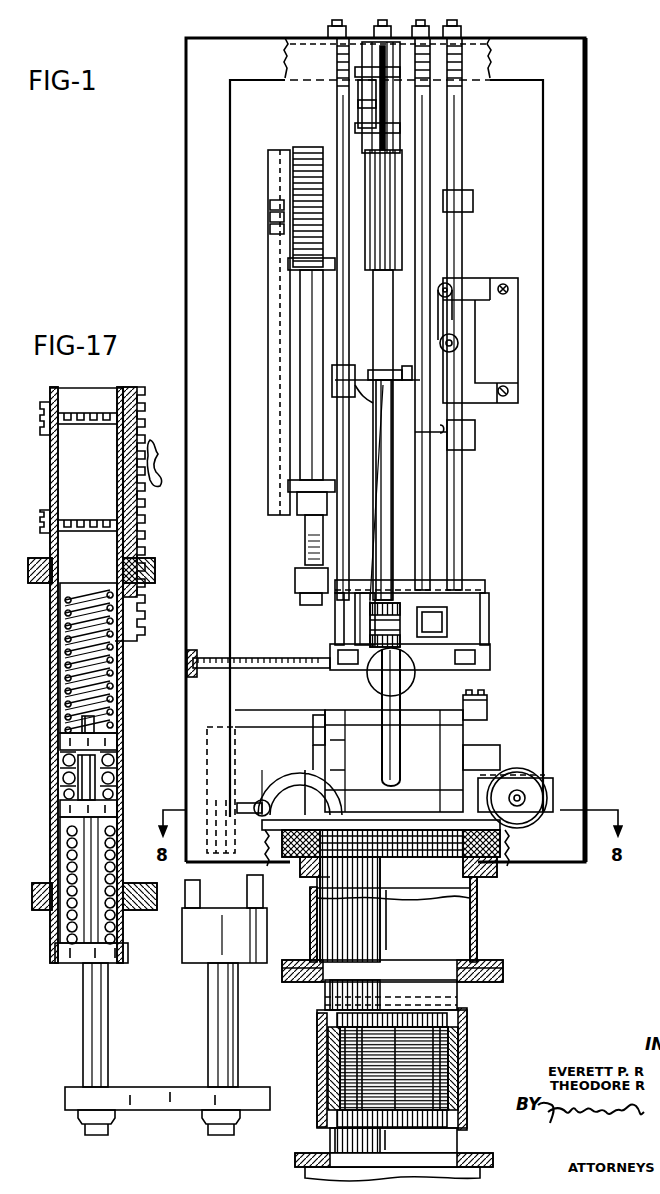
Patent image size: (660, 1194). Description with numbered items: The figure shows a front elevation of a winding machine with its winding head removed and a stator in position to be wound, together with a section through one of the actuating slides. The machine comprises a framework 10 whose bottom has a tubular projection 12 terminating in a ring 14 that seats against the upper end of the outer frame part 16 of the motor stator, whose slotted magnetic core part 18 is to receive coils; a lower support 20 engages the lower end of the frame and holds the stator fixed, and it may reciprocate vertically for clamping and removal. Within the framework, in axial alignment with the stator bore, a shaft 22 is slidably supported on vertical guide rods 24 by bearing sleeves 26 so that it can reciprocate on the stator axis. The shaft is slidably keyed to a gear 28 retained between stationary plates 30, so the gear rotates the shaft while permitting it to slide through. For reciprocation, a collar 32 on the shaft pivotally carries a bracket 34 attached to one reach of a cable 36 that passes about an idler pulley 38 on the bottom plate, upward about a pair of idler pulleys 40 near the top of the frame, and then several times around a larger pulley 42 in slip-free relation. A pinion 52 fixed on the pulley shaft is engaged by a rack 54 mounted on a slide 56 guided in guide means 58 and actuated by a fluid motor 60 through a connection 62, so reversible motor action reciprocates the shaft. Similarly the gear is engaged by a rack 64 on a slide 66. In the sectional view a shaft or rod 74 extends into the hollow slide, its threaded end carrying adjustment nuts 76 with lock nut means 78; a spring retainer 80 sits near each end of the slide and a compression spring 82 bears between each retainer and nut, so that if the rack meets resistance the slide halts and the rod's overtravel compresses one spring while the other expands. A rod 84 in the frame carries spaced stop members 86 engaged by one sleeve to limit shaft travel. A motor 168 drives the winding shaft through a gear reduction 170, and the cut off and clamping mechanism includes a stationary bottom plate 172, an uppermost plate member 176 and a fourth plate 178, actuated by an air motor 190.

In FIG. 1, the framework 10 is at (575, 494).
In FIG. 1, the tubular projection 12 is at (486, 965).
In FIG. 1, the ring 14 is at (482, 1000).
In FIG. 1, the outer frame part 16 is at (471, 1029).
In FIG. 1, the slotted magnetic core part 18 is at (467, 1062).
In FIG. 1, the lower support 20 is at (463, 1156).
In FIG. 1, the shaft 22 is at (400, 498).
In FIG. 1, the vertical guide rods 24 is at (465, 262).
In FIG. 1, the bearing sleeves 26 is at (440, 387).
In FIG. 1, the gear 28 is at (350, 628).
In FIG. 1, the stationary plates 30 is at (483, 652).
In FIG. 1, the collar 32 is at (398, 367).
In FIG. 1, the bracket 34 is at (344, 408).
In FIG. 1, the cable 36 is at (396, 300).
In FIG. 1, the idler pulley 38 is at (416, 672).
In FIG. 1, the idler pulleys 40 is at (378, 75).
In FIG. 1, the pulley 42 is at (398, 192).
In FIG. 1, the pinion 52 is at (292, 224).
In FIG. 17, the pinion 52 is at (162, 453).
In FIG. 1, the rack 54 is at (296, 158).
In FIG. 17, the rack 54 is at (134, 394).
In FIG. 1, the slide 56 is at (279, 332).
In FIG. 17, the slide 56 is at (86, 396).
In FIG. 1, the guide means 58 is at (290, 265).
In FIG. 17, the guide means 58 is at (36, 580).
In FIG. 17, the fluid motor 60 is at (242, 952).
In FIG. 17, the connection 62 is at (155, 1100).
In FIG. 1, the rack 64 is at (440, 592).
In FIG. 1, the slide 66 is at (440, 640).
In FIG. 1, the shaft or rod 74 is at (304, 564).
In FIG. 17, the shaft or rod 74 is at (99, 1045).
In FIG. 17, the adjustment nuts 76 is at (124, 756).
In FIG. 17, the lock nut means 78 is at (52, 778).
In FIG. 17, the spring retainer 80 is at (110, 622).
In FIG. 17, the compression spring 82 is at (108, 670).
In FIG. 1, the rod 84 is at (462, 467).
In FIG. 1, the stop members 86 is at (473, 205).
In FIG. 1, the motor 168 is at (480, 698).
In FIG. 1, the gear reduction 170 is at (468, 756).
In FIG. 1, the stationary bottom plate 172 is at (484, 909).
In FIG. 1, the uppermost plate member 176 is at (378, 854).
In FIG. 1, the fourth plate 178 is at (370, 904).
In FIG. 1, the air motor 190 is at (262, 782).